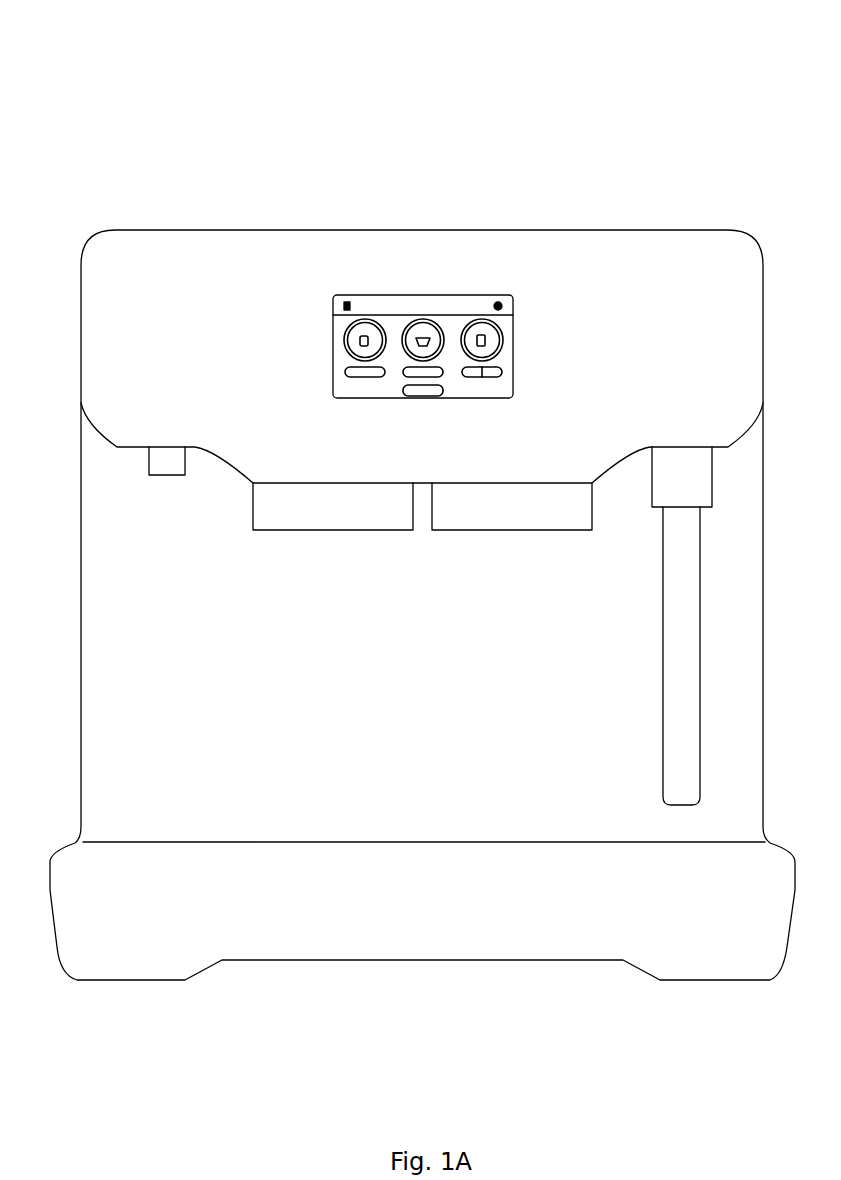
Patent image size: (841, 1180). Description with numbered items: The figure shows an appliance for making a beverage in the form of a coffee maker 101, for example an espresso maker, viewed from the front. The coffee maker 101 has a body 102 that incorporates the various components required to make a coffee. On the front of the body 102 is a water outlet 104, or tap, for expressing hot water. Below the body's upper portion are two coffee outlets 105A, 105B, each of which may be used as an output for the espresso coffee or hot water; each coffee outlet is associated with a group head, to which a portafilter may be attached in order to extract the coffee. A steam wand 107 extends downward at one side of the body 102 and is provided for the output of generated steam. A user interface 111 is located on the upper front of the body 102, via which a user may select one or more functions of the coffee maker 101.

The coffee maker 101 is at (753, 33).
The body 102 is at (422, 526).
The water outlet 104 is at (141, 524).
The coffee outlet 105A is at (304, 575).
The coffee outlet 105B is at (512, 575).
The steam wand 107 is at (635, 626).
The user interface 111 is at (500, 346).